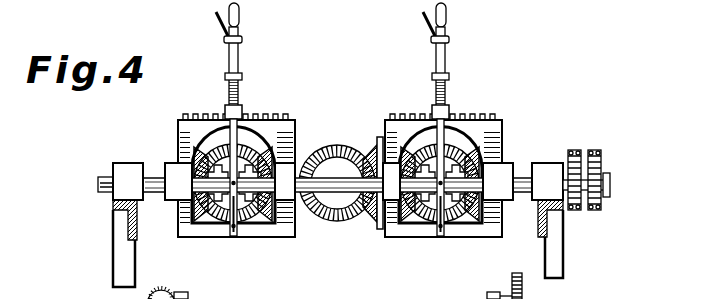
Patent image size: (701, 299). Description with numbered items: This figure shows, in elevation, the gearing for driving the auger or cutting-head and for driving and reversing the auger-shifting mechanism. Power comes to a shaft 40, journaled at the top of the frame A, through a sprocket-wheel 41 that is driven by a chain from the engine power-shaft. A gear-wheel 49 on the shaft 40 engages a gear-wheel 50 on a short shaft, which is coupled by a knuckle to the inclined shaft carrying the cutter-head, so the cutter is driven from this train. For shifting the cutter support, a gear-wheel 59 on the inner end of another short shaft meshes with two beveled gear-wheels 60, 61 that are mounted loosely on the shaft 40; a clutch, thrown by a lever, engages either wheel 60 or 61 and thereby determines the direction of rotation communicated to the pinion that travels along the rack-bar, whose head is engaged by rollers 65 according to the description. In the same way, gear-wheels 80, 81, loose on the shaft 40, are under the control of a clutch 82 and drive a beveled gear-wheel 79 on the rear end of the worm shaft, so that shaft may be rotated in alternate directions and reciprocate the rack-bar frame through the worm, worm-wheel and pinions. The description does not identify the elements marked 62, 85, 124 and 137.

The shaft 40 is at (524, 170).
The sprocket-wheel 41 is at (597, 166).
The gear-wheel 49 is at (371, 147).
The gear-wheel 50 is at (340, 200).
The gear-wheel 59 is at (457, 148).
The beveled gear-wheel 60 is at (467, 222).
The beveled gear-wheel 61 is at (411, 222).
The clutch rod 62 is at (444, 222).
The rollers 65 is at (437, 60).
The beveled gear-wheel 79 is at (247, 147).
The gear-wheel 80 is at (197, 225).
The gear-wheel 81 is at (258, 224).
The clutch 82 is at (234, 224).
The lever rod 85 is at (238, 63).
The gear 137 is at (188, 294).
The shaft 124 is at (417, 286).
The frame A is at (112, 239).